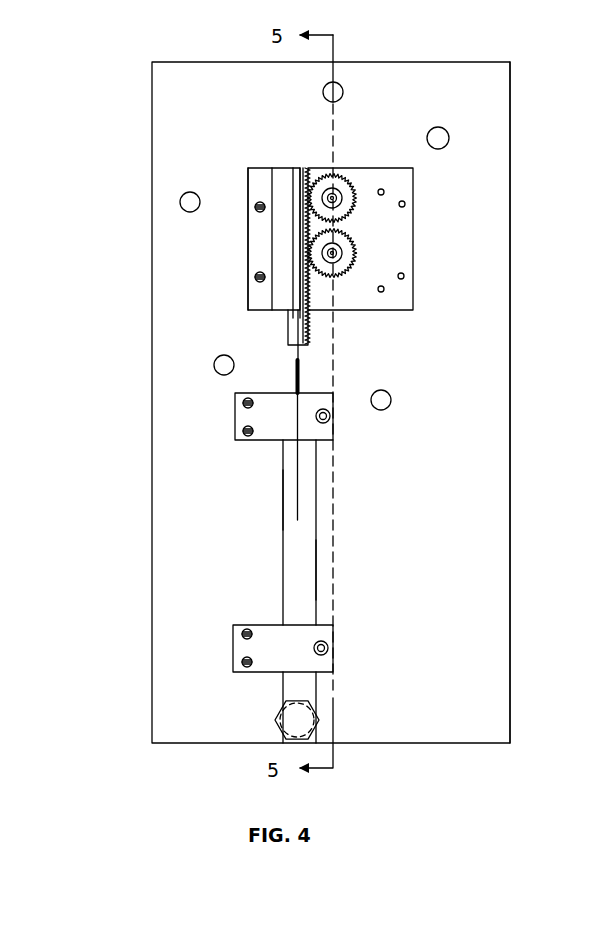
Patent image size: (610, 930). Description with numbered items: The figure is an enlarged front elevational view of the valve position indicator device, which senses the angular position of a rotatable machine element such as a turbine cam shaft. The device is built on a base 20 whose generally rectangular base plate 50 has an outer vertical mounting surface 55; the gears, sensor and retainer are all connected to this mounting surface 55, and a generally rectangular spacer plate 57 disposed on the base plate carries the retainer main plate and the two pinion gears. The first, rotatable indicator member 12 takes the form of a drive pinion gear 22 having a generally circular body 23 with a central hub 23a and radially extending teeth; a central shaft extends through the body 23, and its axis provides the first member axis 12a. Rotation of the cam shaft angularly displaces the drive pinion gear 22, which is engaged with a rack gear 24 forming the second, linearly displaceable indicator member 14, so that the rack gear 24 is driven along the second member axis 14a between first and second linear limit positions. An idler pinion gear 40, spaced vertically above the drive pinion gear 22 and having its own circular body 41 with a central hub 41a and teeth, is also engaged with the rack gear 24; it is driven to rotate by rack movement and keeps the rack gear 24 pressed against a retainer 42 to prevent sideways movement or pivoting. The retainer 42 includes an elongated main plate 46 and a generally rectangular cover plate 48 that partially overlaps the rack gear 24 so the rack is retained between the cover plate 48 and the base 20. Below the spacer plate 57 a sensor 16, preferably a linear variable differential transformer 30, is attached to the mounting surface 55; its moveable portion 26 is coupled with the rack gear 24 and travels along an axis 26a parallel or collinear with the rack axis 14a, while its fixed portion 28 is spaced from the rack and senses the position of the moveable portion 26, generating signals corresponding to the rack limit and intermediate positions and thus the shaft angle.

The first indicator member 12 is at (380, 259).
The first member axis 12a is at (340, 244).
The second indicator member 14 is at (372, 333).
The second member axis 14a is at (298, 170).
The sensor 16 is at (258, 552).
The base 20 is at (137, 525).
The drive pinion gear 22 is at (364, 236).
The circular body 23 is at (344, 270).
The central hub 23a is at (340, 256).
The rack gear 24 is at (285, 328).
The sensor moveable portion 26 is at (304, 376).
The moveable portion axis 26a is at (298, 452).
The sensor fixed portion 28 is at (305, 573).
The linear variable differential transformer 30 is at (282, 498).
The idler pinion gear 40 is at (380, 218).
The circular body 41 is at (338, 174).
The upper gear hub 41a is at (346, 199).
The retainer 42 is at (245, 251).
The elongated plate 46 is at (258, 170).
The cover plate 48 is at (307, 170).
The base plate 50 is at (481, 578).
The mounting surface 55 is at (464, 525).
The spacer plate 57 is at (402, 300).